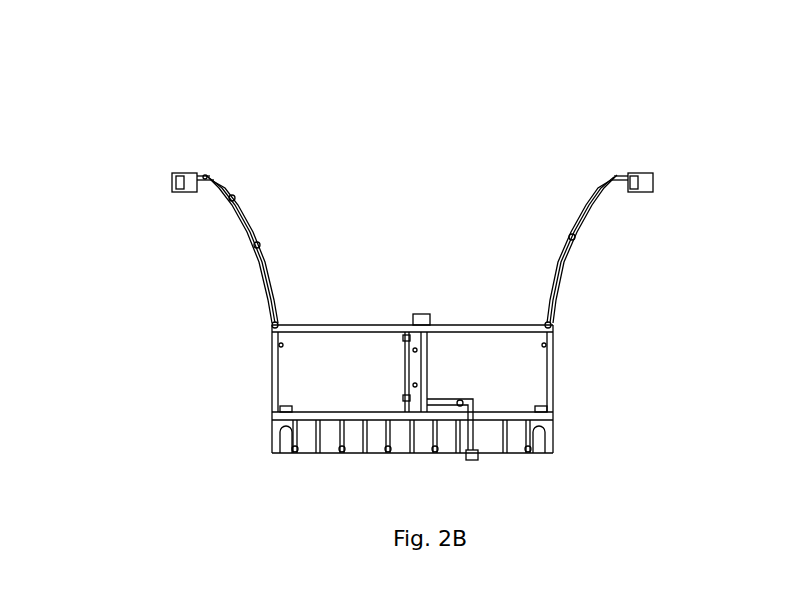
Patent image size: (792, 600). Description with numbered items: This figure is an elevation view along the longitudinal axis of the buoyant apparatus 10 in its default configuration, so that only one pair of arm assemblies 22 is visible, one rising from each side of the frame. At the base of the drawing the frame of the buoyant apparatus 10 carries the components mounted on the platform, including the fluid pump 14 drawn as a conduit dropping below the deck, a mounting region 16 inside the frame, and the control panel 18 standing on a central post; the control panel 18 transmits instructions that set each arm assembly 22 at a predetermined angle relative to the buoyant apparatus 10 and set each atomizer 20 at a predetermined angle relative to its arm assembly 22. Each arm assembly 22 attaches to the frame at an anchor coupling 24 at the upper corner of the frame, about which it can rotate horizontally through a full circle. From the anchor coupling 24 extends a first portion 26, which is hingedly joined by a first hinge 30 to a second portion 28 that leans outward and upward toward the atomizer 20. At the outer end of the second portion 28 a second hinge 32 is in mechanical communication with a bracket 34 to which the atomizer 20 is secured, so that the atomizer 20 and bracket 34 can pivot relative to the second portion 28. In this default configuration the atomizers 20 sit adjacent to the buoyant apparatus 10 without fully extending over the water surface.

The buoyant apparatus 10 is at (553, 420).
The fluid pump 14 is at (478, 458).
The interior mounting 16 is at (333, 410).
The control panel 18 is at (420, 314).
The atomizer 20 is at (170, 190).
The arm assembly 22 is at (592, 172).
The anchor coupling 24 is at (272, 324).
The first portion 26 is at (268, 273).
The second portion 28 is at (238, 193).
The first hinge 30 is at (252, 242).
The second hinge 32 is at (227, 182).
The bracket 34 is at (205, 173).